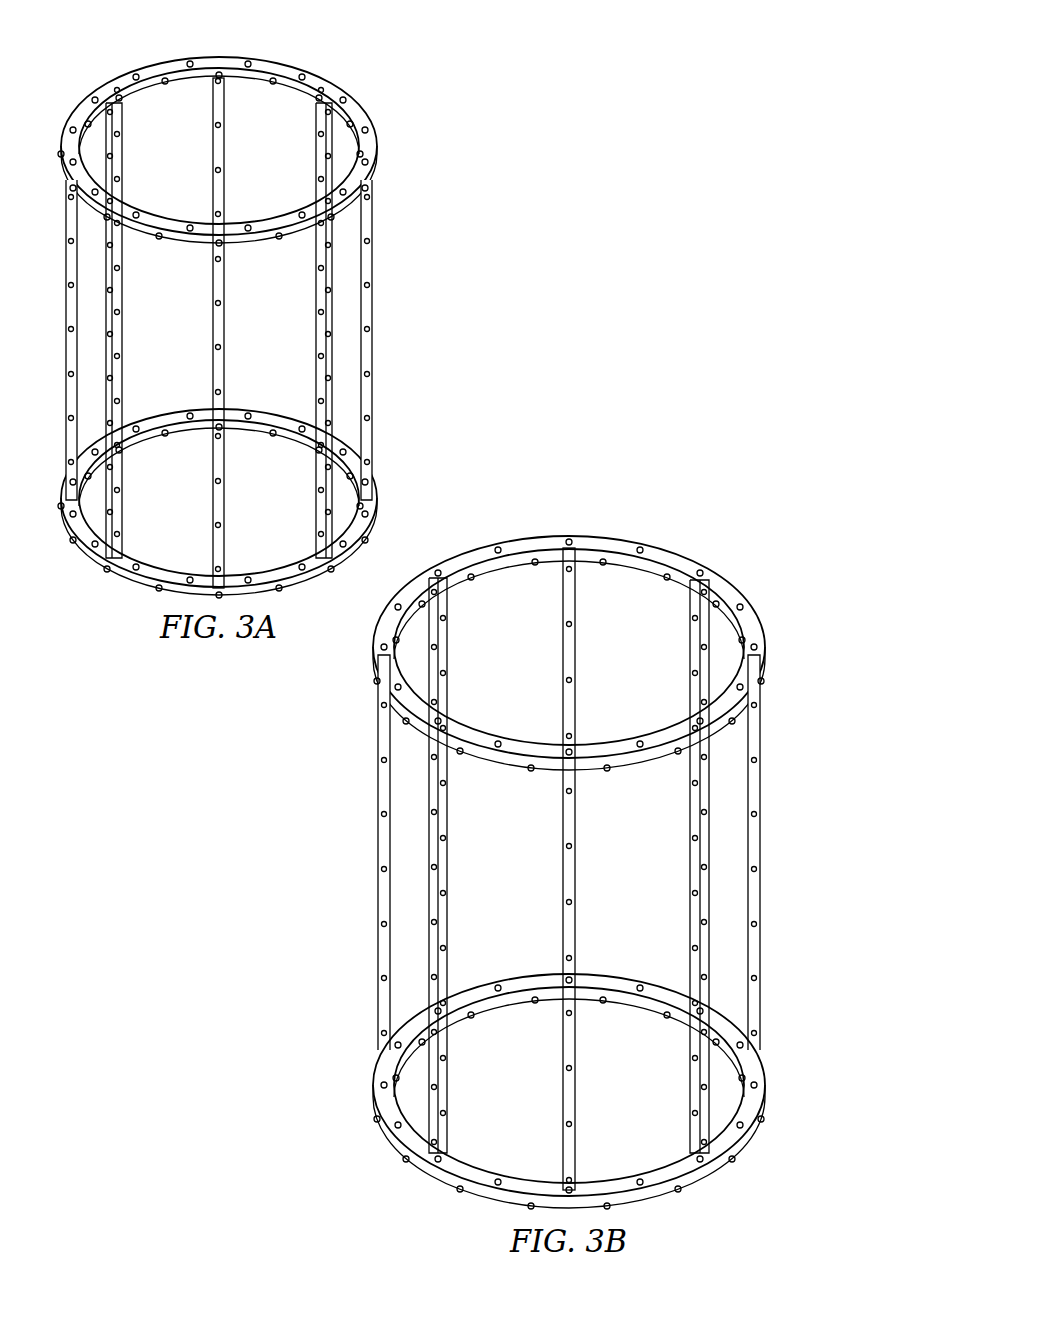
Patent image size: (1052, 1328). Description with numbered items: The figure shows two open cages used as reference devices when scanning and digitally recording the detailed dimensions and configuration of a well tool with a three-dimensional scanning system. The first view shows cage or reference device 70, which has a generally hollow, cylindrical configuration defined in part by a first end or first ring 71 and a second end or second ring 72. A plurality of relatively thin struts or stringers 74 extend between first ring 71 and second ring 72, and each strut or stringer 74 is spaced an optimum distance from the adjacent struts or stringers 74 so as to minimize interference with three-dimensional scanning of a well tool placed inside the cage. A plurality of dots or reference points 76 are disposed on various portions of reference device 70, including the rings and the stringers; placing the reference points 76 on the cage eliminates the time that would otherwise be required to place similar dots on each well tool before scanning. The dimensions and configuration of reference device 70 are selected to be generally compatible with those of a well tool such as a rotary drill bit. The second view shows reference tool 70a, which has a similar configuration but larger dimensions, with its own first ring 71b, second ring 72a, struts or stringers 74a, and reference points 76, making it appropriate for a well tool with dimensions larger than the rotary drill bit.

In FIG. 3A, the cage or reference device 70 is at (242, 305).
In FIG. 3B, the reference tool 70a is at (562, 840).
In FIG. 3A, the first end or first ring 71 is at (83, 550).
In FIG. 3B, the first ring 71b is at (700, 1173).
In FIG. 3A, the second end or second ring 72 is at (83, 113).
In FIG. 3B, the second ring 72a is at (680, 553).
In FIG. 3A, the struts or stringers 74 is at (66, 308).
In FIG. 3B, the struts or stringers 74a is at (577, 808).
In FIG. 3A, the dots or reference points 76 is at (190, 61).
In FIG. 3B, the dots or reference points 76 is at (488, 548).